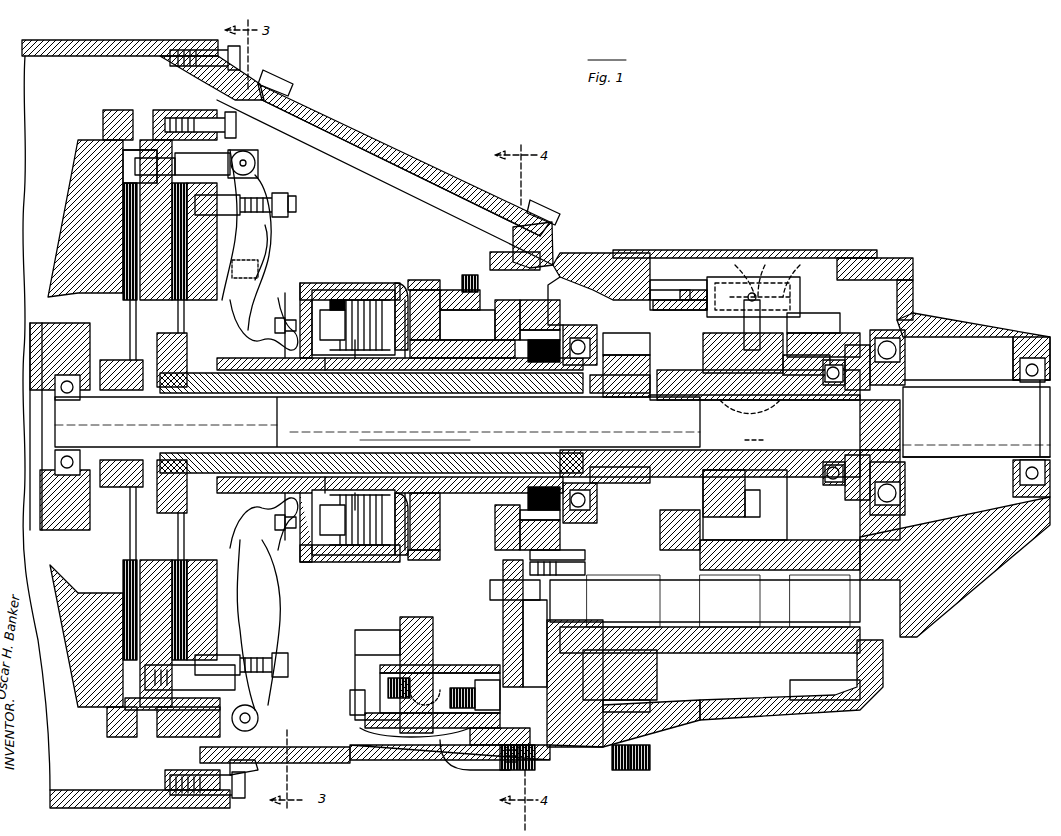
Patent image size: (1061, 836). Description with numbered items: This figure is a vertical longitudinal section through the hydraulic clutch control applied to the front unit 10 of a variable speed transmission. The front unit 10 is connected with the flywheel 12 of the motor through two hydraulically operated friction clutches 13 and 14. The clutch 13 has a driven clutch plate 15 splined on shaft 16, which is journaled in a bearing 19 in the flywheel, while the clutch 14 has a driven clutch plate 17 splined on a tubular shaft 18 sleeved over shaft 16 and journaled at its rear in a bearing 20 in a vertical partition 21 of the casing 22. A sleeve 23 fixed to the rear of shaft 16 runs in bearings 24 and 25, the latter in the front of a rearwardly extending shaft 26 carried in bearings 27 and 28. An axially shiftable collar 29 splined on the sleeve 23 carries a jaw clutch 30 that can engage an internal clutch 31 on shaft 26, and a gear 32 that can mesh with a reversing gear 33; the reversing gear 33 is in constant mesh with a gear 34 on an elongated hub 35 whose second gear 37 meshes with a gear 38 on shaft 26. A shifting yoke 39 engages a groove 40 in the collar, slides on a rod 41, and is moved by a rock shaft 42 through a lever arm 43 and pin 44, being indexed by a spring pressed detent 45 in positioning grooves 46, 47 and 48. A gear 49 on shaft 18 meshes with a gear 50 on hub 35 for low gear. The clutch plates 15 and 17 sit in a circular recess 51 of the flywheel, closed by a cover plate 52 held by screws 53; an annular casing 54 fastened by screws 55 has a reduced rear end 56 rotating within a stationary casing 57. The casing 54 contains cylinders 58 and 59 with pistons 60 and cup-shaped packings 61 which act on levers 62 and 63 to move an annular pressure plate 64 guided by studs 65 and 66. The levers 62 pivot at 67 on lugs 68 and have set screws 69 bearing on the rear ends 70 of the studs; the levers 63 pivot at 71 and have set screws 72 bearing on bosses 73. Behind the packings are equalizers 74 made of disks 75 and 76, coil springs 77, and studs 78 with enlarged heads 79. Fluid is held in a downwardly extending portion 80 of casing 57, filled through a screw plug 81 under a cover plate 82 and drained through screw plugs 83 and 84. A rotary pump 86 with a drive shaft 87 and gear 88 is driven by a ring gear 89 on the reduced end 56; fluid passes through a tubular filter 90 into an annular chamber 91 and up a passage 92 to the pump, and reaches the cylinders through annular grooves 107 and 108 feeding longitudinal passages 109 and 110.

The front unit 10 is at (618, 248).
The flywheel 12 is at (78, 172).
The friction clutch 13 is at (120, 245).
The friction clutch 14 is at (230, 238).
The driven clutch plate 15 is at (130, 312).
The shaft 16 is at (270, 418).
The driven clutch plate 17 is at (185, 312).
The tubular shaft 18 is at (395, 393).
The bearing 19 is at (55, 385).
The bearing 20 is at (578, 365).
The vertical partition 21 is at (535, 280).
The casing 22 is at (575, 262).
The sleeve 23 is at (670, 395).
The bearing 24 is at (627, 395).
The bearing 25 is at (855, 390).
The rearwardly extending shaft 26 is at (976, 418).
The bearing 27 is at (905, 350).
The bearing 28 is at (1032, 350).
The axially shiftable collar 29 is at (712, 373).
The jaw clutch 30 is at (795, 375).
The internal clutch 31 is at (830, 385).
The gear 32 is at (748, 460).
The reversing gear 33 is at (690, 520).
The gear 34 is at (668, 520).
The elongated hub 35 is at (745, 653).
The second gear 37 is at (790, 687).
The gear 38 is at (822, 320).
The shifting yoke 39 is at (722, 277).
The groove 40 is at (745, 505).
The rod 41 is at (665, 280).
The rock shaft 42 is at (734, 422).
The lever arm 43 is at (705, 335).
The pin 44 is at (753, 319).
The spring pressed detent 45 is at (740, 265).
The positioning groove 46 is at (775, 265).
The positioning groove 47 is at (800, 265).
The positioning groove 48 is at (690, 290).
The gear 49 is at (625, 333).
The gear 50 is at (632, 700).
The circular recess 51 is at (146, 425).
The cover plate 52 is at (296, 205).
The screws 53 is at (180, 135).
The annular casing 54 is at (390, 283).
The screws 55 is at (260, 266).
The reduced rear end 56 is at (420, 500).
The stationary casing 57 is at (450, 288).
The hydraulic cylinders 58 is at (340, 562).
The hydraulic cylinders 59 is at (340, 300).
The pistons 60 is at (262, 333).
The cup-shaped packings 61 is at (312, 283).
The levers 62 is at (278, 612).
The levers 63 is at (268, 230).
The annular pressure plate 64 is at (150, 208).
The studs 65 is at (180, 710).
The studs 66 is at (160, 135).
The pivot 67 is at (258, 718).
The lugs 68 is at (245, 760).
The adjustable set screws 69 is at (288, 662).
The rear ends 70 is at (245, 688).
The pivot 71 is at (248, 150).
The adjustable set screws 72 is at (288, 200).
The bosses 73 is at (262, 185).
The equalizers 74 is at (290, 360).
The sheet metal disks 75 is at (406, 360).
The sheet metal disks 76 is at (326, 372).
The coil springs 77 is at (356, 358).
The studs 78 is at (412, 283).
The enlarged heads 79 is at (350, 320).
The downwardly extending portion 80 is at (400, 632).
The screw plug 81 is at (468, 275).
The cover plate 82 is at (395, 148).
The screw plug 83 is at (500, 733).
The screw plug 84 is at (510, 768).
The rotary pump 86 is at (455, 645).
The drive shaft 87 is at (530, 625).
The gear 88 is at (525, 660).
The ring gear 89 is at (554, 562).
The tubular filter 90 is at (487, 693).
The annular chamber 91 is at (395, 730).
The passage 92 is at (350, 713).
The annular groove 107 is at (523, 425).
The annular groove 108 is at (486, 425).
The longitudinal passages 109 is at (448, 350).
The longitudinal passages 110 is at (415, 437).